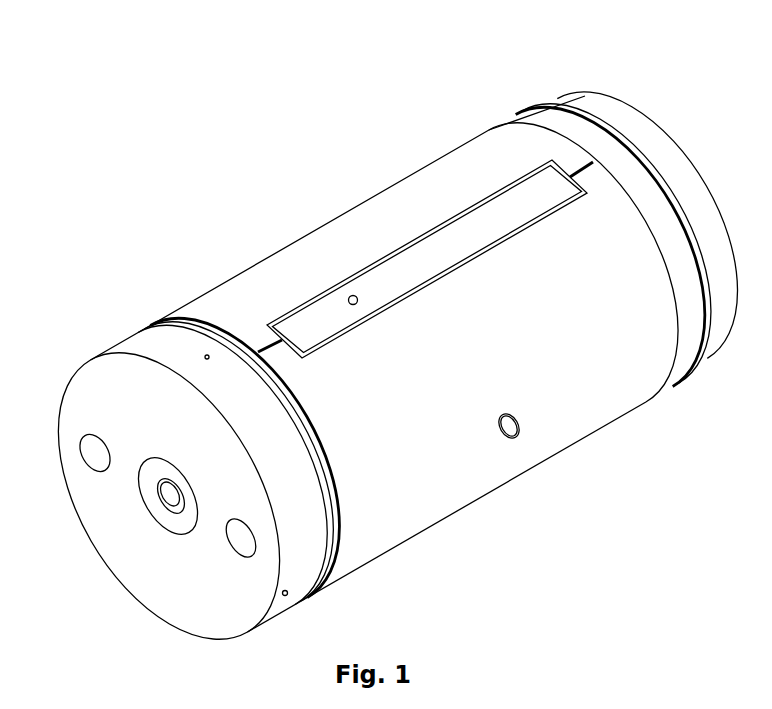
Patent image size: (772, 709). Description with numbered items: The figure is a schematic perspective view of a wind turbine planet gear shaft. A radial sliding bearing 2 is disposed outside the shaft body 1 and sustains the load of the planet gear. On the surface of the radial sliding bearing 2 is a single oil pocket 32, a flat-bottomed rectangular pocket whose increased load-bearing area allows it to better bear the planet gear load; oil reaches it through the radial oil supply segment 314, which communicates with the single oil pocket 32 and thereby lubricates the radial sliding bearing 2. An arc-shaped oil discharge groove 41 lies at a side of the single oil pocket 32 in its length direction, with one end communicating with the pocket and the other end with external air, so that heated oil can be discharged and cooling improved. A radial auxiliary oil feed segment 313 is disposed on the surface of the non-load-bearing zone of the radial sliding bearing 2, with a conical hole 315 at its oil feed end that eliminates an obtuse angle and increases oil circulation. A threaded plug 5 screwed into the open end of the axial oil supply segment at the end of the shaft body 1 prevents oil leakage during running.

The shaft body 1 is at (115, 390).
The radial sliding bearing 2 is at (230, 296).
The threaded plug 5 is at (162, 485).
The single oil pocket 32 is at (418, 257).
The radial oil supply segment 314 is at (352, 296).
The oil discharge groove 41 is at (580, 152).
The radial auxiliary oil feed segment 313 is at (503, 440).
The conical hole 315 is at (515, 430).